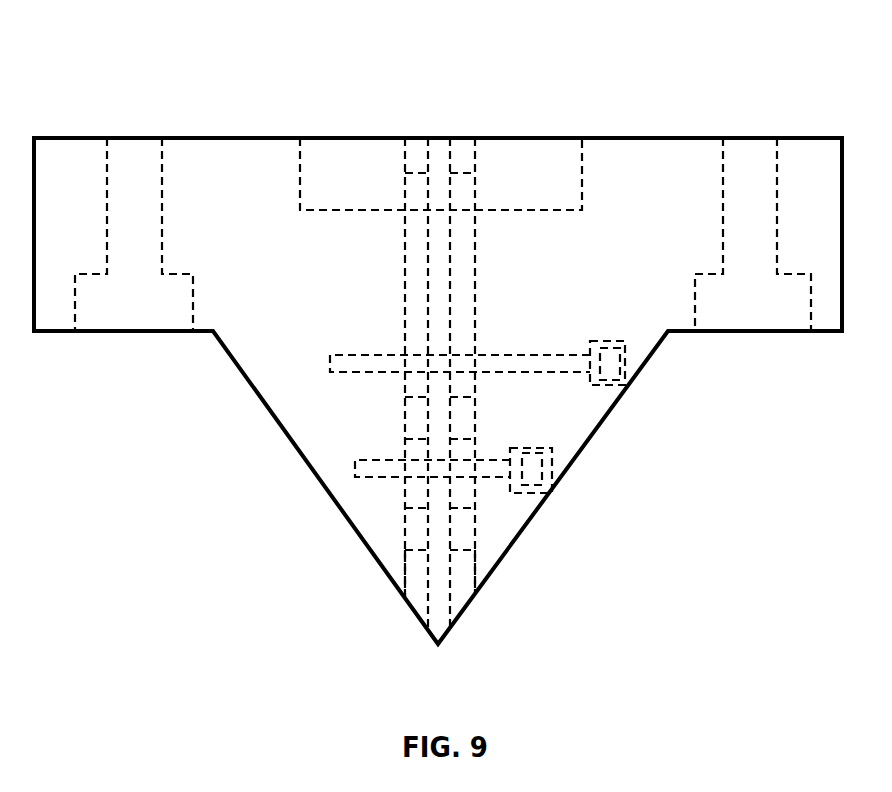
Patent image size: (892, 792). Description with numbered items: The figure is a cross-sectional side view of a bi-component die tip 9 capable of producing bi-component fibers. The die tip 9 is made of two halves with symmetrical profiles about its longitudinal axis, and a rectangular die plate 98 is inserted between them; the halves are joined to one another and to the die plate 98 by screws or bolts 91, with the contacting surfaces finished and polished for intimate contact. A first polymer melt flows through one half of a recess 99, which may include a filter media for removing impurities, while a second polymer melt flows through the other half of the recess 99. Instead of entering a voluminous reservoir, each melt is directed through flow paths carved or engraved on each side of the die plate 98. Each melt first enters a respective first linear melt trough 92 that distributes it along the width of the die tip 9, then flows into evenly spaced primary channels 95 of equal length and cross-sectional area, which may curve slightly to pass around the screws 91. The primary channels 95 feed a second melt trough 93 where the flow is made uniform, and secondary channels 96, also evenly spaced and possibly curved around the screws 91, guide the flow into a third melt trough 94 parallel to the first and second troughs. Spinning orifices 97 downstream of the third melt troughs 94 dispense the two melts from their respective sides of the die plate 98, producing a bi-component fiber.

The die tip 9 is at (712, 80).
The screws or bolts 91 is at (545, 470).
The first linear melt trough 92 is at (417, 195).
The second melt trough 93 is at (417, 415).
The third melt trough 94 is at (458, 529).
The primary channels 95 is at (468, 279).
The secondary channels 96 is at (412, 453).
The spinning orifices 97 is at (465, 585).
The rectangular die plate 98 is at (438, 163).
The recess 99 is at (513, 196).